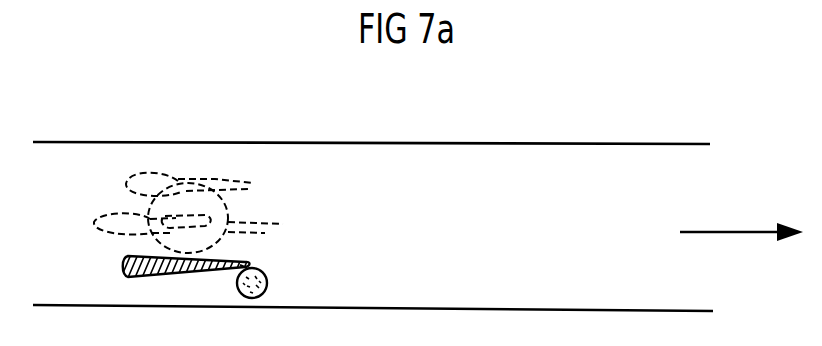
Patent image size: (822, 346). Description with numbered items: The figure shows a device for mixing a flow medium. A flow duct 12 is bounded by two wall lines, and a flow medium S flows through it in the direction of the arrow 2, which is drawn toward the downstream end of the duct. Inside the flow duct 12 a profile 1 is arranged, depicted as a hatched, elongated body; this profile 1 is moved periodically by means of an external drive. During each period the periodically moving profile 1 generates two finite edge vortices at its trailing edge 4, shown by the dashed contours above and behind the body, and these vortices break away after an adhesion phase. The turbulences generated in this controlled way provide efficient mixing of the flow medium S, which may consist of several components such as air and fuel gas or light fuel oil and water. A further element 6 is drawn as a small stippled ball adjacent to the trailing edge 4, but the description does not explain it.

The flow duct 12 is at (382, 143).
The profile 1 is at (122, 266).
The trailing edge 4 is at (247, 267).
The ball element 6 is at (271, 268).
The arrow 2 is at (737, 231).